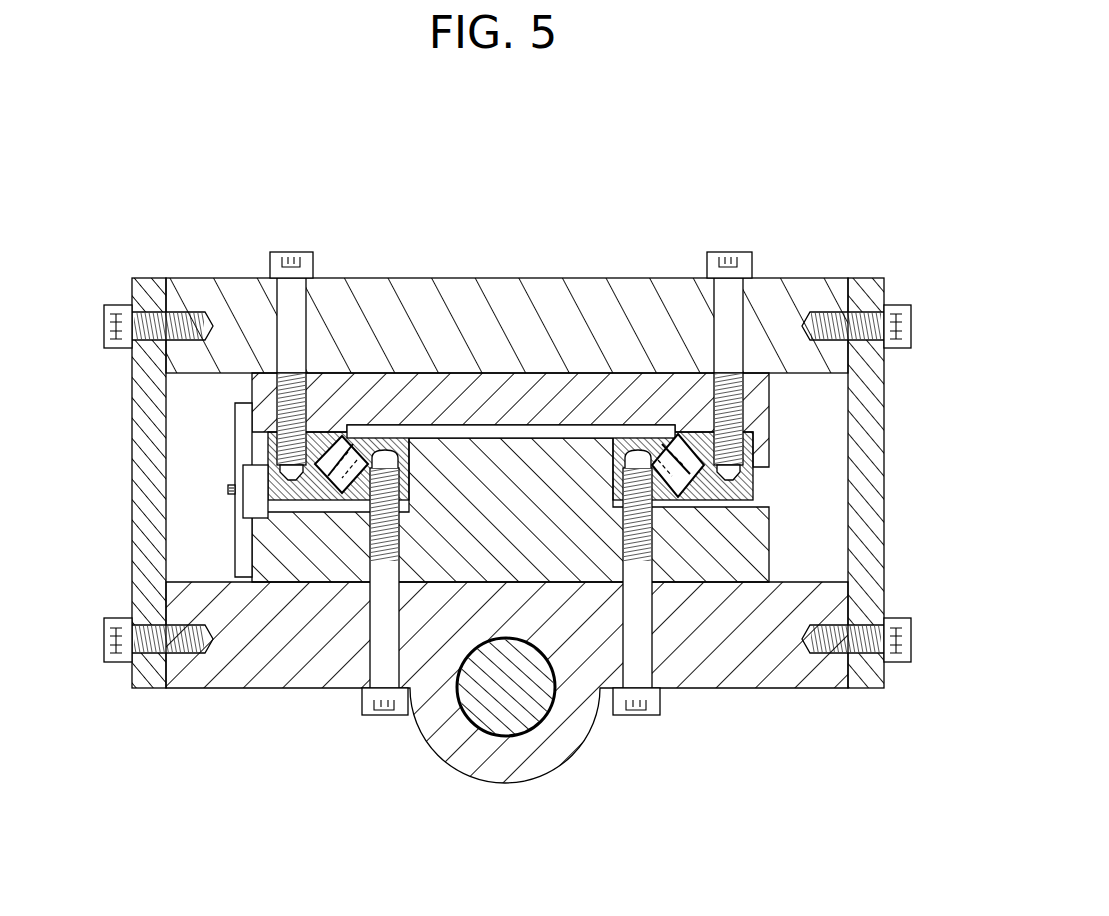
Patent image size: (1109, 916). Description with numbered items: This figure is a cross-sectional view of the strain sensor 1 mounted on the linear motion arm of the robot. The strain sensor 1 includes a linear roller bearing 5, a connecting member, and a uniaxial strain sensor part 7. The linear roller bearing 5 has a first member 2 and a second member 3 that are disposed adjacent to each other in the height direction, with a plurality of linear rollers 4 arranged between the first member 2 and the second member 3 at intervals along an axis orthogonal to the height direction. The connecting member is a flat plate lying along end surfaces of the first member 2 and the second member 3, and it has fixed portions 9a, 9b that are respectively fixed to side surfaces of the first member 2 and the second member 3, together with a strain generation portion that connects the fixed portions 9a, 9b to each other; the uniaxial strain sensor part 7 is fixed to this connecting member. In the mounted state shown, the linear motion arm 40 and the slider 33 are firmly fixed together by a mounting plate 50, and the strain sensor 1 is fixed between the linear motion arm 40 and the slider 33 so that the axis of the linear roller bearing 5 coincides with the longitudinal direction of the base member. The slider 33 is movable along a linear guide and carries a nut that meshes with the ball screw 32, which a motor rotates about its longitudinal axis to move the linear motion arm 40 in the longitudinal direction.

The strain sensor 1 is at (776, 392).
The first member 2 is at (770, 544).
The second member 3 is at (770, 410).
The linear rollers 4 is at (339, 433).
The linear roller bearing 5 is at (760, 487).
The uniaxial strain sensor part 7 is at (229, 490).
The fixed portion 9a is at (240, 580).
The fixed portion 9b is at (233, 403).
The ball screw 32 is at (503, 737).
The slider 33 is at (788, 690).
The linear motion arm 40 is at (500, 276).
The mounting plate 50 is at (132, 424).